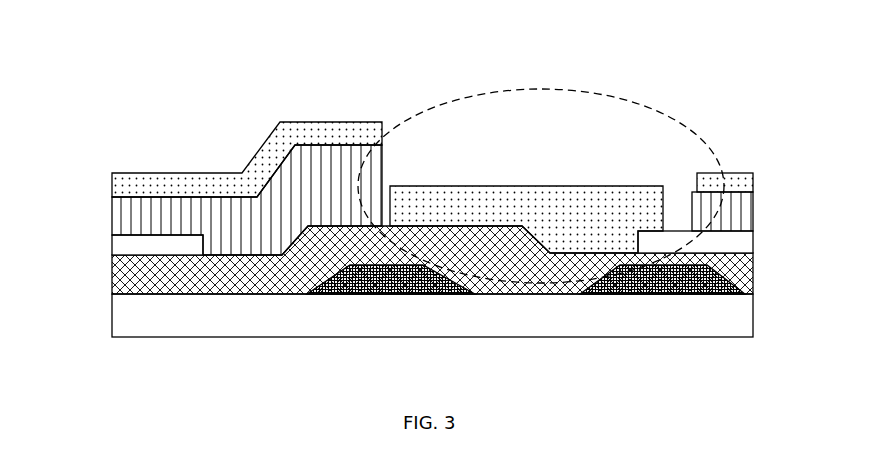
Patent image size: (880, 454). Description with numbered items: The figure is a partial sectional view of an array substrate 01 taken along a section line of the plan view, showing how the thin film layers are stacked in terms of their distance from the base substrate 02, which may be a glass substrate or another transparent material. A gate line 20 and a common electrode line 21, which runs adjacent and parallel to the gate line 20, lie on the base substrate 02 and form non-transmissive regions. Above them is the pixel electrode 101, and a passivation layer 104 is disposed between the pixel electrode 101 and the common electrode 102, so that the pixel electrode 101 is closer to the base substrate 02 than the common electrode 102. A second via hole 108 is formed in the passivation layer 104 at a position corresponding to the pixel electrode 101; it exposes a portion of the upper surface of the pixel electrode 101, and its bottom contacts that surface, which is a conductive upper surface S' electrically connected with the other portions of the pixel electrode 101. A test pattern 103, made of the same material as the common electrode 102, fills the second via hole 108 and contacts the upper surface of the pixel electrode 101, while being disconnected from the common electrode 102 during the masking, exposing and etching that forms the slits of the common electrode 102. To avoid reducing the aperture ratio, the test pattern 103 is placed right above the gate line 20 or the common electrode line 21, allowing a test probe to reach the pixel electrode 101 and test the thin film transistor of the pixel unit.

The array substrate 01 is at (50, 88).
The base substrate 02 is at (127, 322).
The gate line 20 is at (387, 277).
The common electrode line 21 is at (713, 288).
The pixel electrode 101 is at (125, 242).
The common electrode 102 is at (125, 182).
The test pattern 103 is at (600, 215).
The passivation layer 104 is at (125, 207).
The second via hole 108 is at (443, 107).
The conductive upper surface S' is at (641, 209).